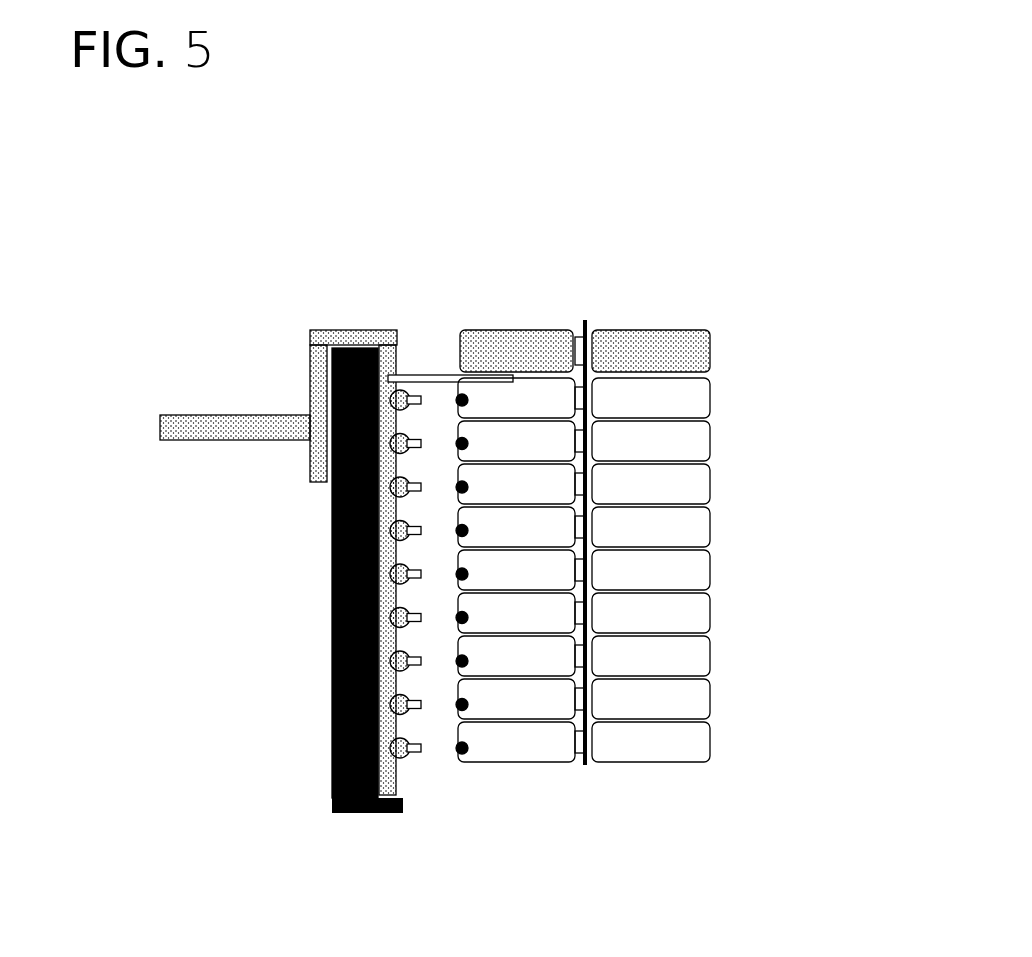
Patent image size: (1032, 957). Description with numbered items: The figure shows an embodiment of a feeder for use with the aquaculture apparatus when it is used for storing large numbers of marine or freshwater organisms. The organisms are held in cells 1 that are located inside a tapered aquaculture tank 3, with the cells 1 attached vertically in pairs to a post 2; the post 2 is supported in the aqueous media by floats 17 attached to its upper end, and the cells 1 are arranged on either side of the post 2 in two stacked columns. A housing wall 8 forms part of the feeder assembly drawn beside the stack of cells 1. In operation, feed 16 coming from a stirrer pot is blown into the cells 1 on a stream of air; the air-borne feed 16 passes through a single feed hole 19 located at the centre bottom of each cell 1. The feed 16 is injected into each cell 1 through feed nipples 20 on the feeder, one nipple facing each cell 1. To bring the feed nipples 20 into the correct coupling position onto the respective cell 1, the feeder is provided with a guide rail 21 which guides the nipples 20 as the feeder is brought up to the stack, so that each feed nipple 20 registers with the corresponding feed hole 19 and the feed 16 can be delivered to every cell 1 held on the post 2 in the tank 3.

The cells 1 is at (737, 407).
The post 2 is at (608, 323).
The aquaculture tank 3 is at (322, 678).
The insulating housing 8 is at (298, 467).
The feed 16 is at (163, 426).
The floats 17 is at (737, 355).
The feed hole 19 is at (480, 753).
The feed nipples 20 is at (415, 774).
The guide rail 21 is at (443, 360).